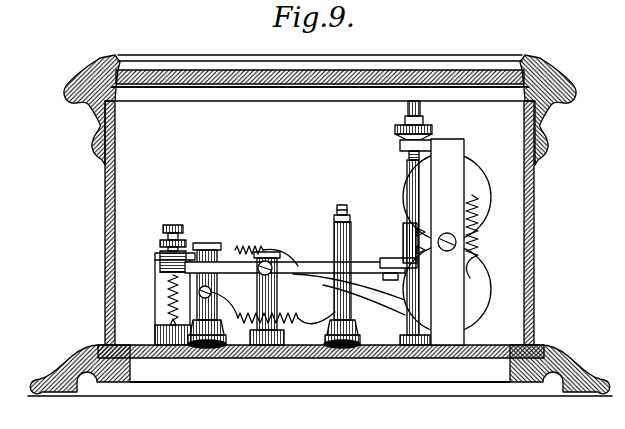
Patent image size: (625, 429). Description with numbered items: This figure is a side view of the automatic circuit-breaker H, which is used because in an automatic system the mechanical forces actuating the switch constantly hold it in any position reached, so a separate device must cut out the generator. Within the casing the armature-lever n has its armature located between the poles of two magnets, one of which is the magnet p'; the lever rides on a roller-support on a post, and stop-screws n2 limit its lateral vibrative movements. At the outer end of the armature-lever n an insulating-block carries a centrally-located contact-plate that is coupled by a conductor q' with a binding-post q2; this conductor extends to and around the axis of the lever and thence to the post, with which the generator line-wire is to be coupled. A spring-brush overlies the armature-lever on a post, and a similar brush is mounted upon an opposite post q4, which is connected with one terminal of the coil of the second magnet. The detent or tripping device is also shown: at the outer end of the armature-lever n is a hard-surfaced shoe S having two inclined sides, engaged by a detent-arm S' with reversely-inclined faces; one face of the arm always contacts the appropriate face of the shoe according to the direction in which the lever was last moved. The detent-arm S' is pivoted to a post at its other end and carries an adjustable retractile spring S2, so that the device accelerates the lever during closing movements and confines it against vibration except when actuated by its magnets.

The automatic circuit-breaker H is at (320, 225).
The detent-arm S' is at (156, 245).
The shoe S is at (161, 298).
The retractile spring S2 is at (170, 301).
The post q4 is at (213, 283).
The conductor q' is at (308, 266).
The stop-screws n2 is at (272, 258).
The armature-lever n is at (330, 268).
The binding-post q2 is at (350, 276).
The magnet p' is at (451, 223).